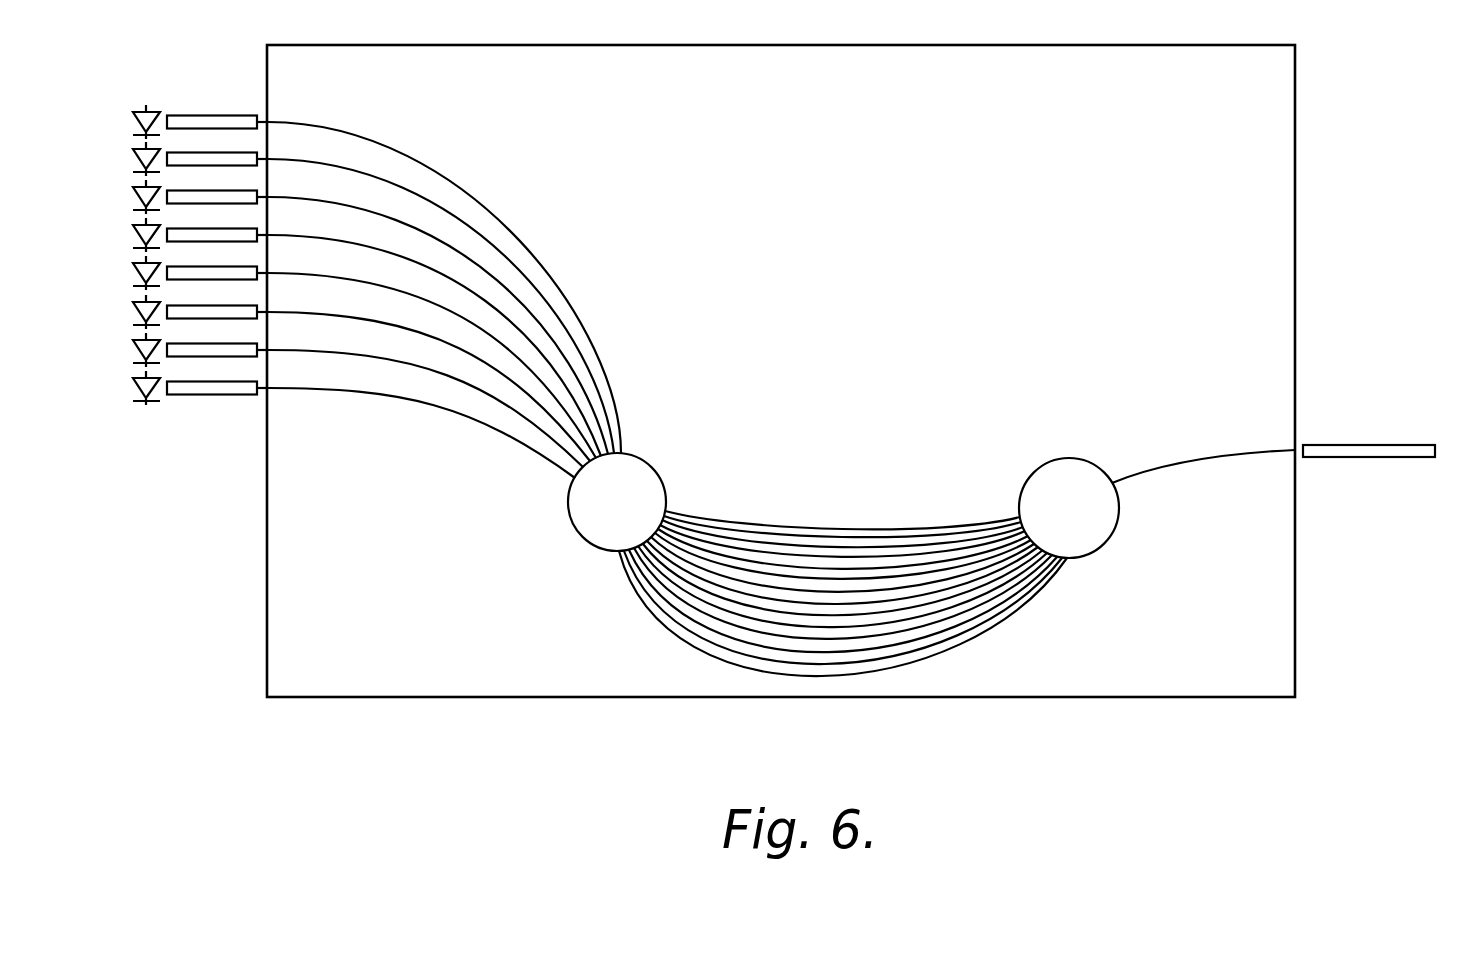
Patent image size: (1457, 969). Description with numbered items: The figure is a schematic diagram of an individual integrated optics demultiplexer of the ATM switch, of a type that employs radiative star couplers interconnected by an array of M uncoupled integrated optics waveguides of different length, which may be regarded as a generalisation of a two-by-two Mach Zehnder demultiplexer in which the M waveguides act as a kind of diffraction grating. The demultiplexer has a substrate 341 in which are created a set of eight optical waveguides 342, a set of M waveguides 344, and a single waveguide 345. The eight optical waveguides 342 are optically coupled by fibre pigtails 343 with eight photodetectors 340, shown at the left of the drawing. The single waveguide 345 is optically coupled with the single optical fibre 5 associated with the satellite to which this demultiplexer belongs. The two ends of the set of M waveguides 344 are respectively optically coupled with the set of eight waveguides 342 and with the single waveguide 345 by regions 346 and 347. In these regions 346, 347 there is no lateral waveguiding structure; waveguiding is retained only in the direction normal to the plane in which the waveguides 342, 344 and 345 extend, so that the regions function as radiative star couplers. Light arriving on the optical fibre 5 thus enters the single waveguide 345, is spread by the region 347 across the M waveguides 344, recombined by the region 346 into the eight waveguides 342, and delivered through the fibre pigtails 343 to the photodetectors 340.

The photodetectors 340 is at (140, 220).
The substrate 341 is at (729, 70).
The optical waveguides 342 is at (495, 340).
The fibre pigtails 343 is at (232, 273).
The set of M waveguides 344 is at (850, 572).
The single waveguide 345 is at (1193, 459).
The region 346 is at (603, 505).
The region 347 is at (1087, 515).
The optical fibre 5 is at (1372, 452).